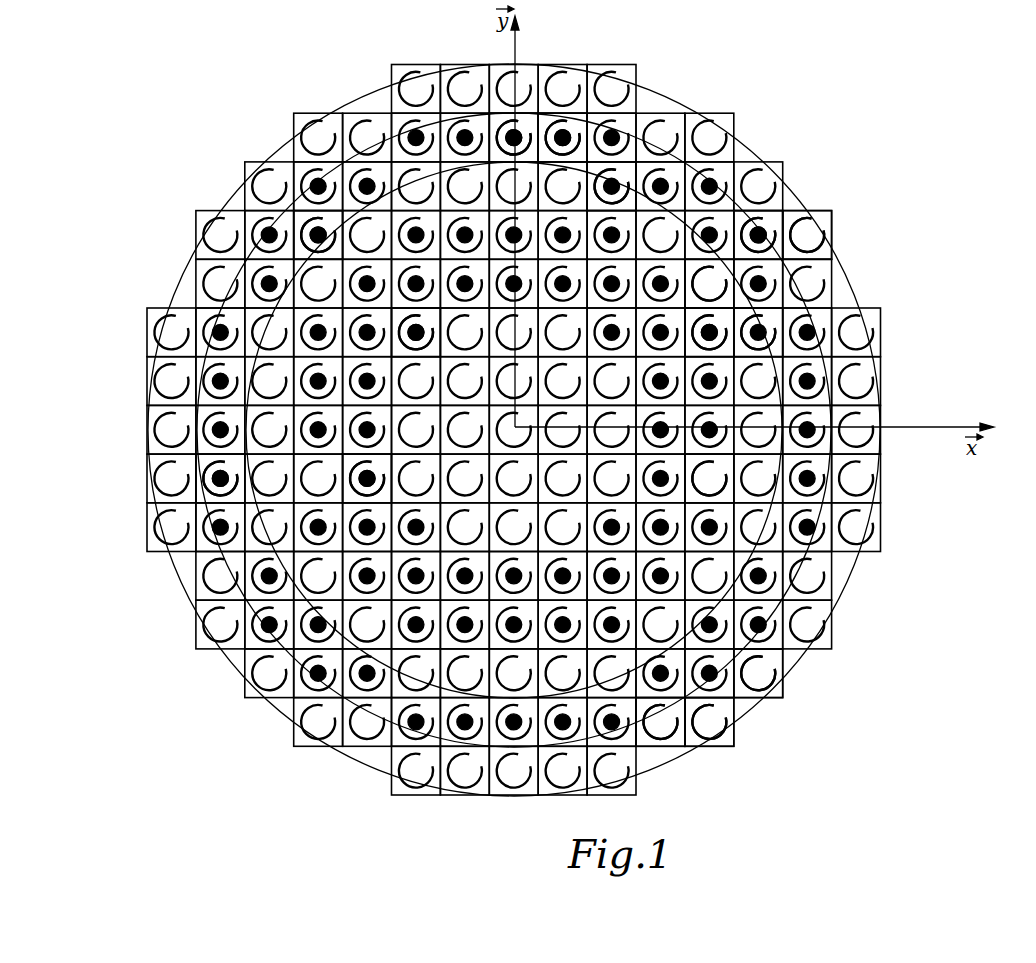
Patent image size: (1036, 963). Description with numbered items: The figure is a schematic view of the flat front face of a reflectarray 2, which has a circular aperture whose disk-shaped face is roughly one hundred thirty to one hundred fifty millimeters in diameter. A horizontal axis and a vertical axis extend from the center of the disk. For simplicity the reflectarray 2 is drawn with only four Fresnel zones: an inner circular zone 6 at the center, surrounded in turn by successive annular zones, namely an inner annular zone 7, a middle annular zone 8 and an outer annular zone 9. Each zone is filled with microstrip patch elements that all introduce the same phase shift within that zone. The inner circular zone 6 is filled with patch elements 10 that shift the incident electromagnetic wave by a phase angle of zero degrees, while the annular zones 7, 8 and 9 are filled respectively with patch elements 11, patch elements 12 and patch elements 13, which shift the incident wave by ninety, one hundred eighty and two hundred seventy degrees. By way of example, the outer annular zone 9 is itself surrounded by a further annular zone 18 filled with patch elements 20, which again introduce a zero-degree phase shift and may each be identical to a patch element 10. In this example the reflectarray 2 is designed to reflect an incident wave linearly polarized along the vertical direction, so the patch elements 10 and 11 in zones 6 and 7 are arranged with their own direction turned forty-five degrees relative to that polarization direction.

The reflectarray 2 is at (472, 430).
The inner circular zone 6 is at (720, 475).
The inner annular zone 7 is at (745, 318).
The annular zone 8 is at (800, 222).
The outer annular zone 9 is at (693, 336).
The patch element 10 is at (500, 500).
The patch element 11 is at (450, 270).
The patch element 12 is at (717, 290).
The patch element 13 is at (522, 125).
The further annular zone 18 is at (797, 658).
The patch element 20 is at (663, 730).